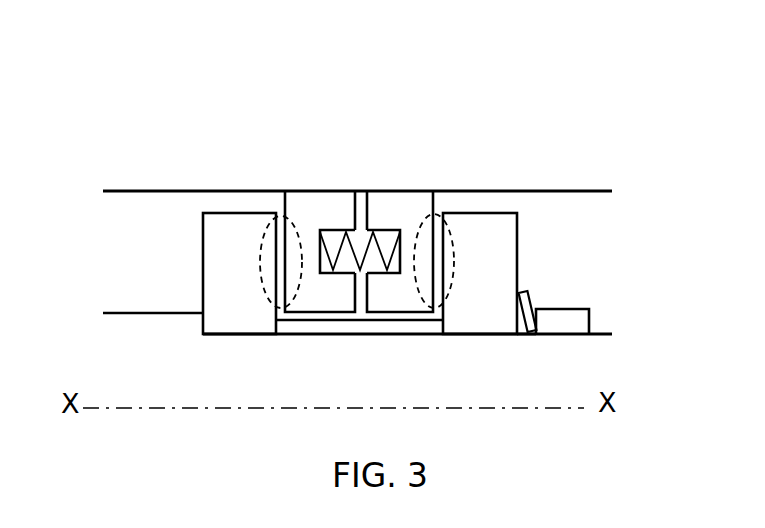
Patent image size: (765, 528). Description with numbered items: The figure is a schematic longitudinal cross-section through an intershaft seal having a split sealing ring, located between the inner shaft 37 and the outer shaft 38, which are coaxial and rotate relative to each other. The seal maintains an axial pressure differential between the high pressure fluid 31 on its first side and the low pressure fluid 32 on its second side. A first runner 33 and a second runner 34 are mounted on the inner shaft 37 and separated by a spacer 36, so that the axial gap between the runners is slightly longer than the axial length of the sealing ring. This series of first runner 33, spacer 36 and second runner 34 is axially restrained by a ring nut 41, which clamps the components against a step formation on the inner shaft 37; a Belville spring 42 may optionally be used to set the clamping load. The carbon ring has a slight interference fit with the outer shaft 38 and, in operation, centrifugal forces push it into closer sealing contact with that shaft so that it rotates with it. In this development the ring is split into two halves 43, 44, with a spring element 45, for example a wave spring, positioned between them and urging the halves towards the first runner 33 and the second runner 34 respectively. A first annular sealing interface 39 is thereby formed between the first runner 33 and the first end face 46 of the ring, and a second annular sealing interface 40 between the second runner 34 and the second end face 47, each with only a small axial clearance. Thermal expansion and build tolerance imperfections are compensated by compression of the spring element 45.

The high pressure fluid 31 is at (165, 262).
The low pressure fluid 32 is at (580, 259).
The first runner 33 is at (228, 232).
The second runner 34 is at (483, 225).
The spacer 36 is at (322, 327).
The inner shaft 37 is at (553, 335).
The outer shaft 38 is at (585, 189).
The first annular sealing interface 39 is at (283, 216).
The second annular sealing interface 40 is at (433, 214).
The ring nut 41 is at (563, 323).
The Belville spring 42 is at (533, 302).
The first ring half 43 is at (325, 205).
The second ring half 44 is at (387, 203).
The spring element 45 is at (335, 245).
The first end face 46 is at (280, 287).
The second end face 47 is at (434, 284).